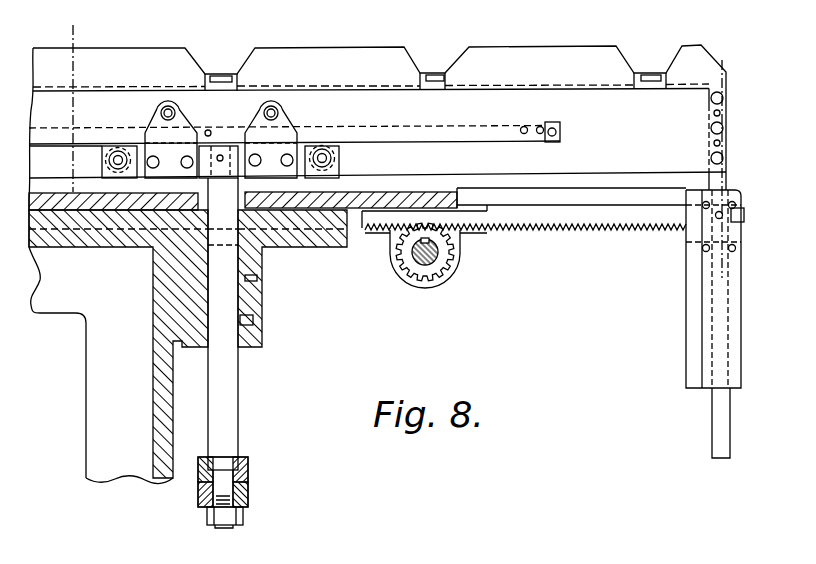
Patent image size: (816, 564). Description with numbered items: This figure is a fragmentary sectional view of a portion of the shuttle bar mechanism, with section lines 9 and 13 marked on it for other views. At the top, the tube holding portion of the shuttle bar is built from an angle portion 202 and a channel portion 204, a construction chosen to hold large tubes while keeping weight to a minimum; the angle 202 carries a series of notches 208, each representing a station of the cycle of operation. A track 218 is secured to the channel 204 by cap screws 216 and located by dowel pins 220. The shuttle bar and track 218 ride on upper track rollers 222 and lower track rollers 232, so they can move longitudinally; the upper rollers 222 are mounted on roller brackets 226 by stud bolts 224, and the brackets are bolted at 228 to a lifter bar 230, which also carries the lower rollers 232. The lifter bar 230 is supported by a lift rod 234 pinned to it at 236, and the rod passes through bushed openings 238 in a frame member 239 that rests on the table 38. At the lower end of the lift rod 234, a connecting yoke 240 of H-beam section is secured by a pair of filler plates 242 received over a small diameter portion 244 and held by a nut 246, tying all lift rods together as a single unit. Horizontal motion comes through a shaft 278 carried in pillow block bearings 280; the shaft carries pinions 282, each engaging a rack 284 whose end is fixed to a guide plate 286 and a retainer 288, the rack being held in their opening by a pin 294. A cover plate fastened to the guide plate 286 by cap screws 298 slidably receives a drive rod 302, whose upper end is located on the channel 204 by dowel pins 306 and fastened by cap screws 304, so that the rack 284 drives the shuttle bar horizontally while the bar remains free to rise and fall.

The section line 9- 9 is at (88, 36).
The section line 13- 13 is at (731, 73).
The table 38 is at (357, 214).
The angle portion 202 is at (147, 58).
The channel portion 204 is at (671, 127).
The notches 208 is at (246, 60).
The cap screws 216 is at (208, 130).
The track 218 is at (472, 128).
The dowel pins 220 is at (557, 140).
The upper track rollers 222 is at (278, 101).
The stud bolts 224 is at (264, 102).
The roller brackets 226 is at (150, 133).
The bolts 228 is at (153, 168).
The lifter bar 230 is at (339, 170).
The lower track rollers 232 is at (347, 138).
The lift rod 234 is at (240, 375).
The pin 236 is at (221, 155).
The bushed openings 238 is at (253, 320).
The frame member 239 is at (153, 380).
The connecting yoke 240 is at (248, 485).
The filler plates 242 is at (248, 465).
The small diameter portion 244 is at (223, 462).
The nut 246 is at (235, 526).
The shaft 278 is at (424, 261).
The pillow block bearings 280 is at (444, 284).
The pinions 282 is at (450, 258).
The rack 284 is at (594, 217).
The guide plate 286 is at (691, 233).
The retainer 288 is at (727, 230).
The pin 294 is at (744, 215).
The cap screws 298 is at (736, 194).
The drive rod 302 is at (729, 425).
The cap screws 304 is at (726, 128).
The dowel pins 306 is at (722, 110).